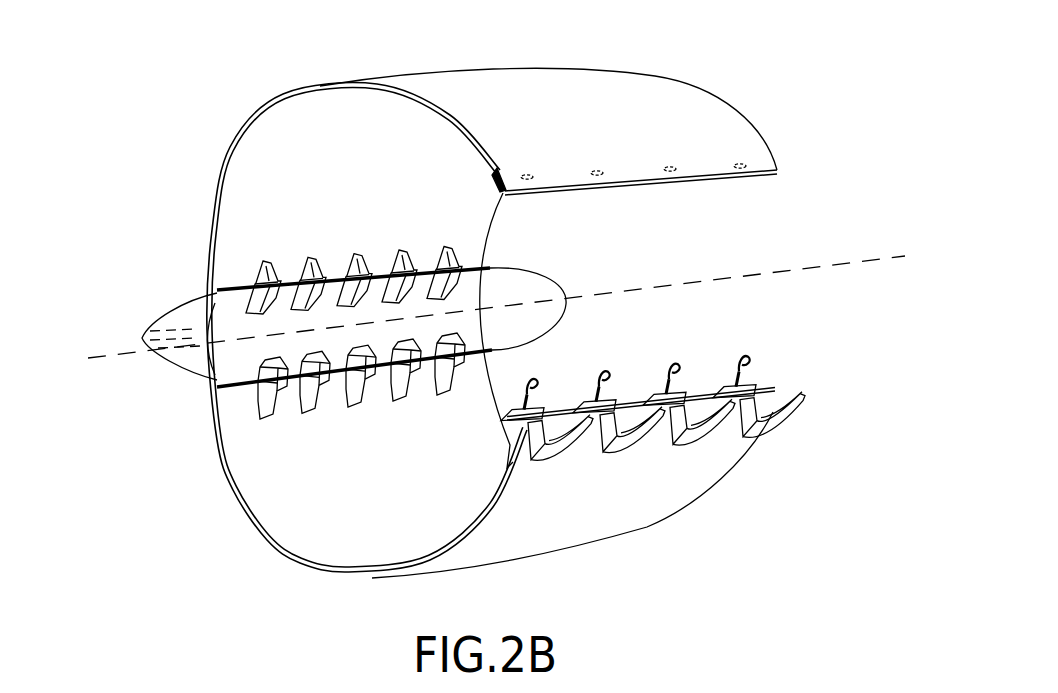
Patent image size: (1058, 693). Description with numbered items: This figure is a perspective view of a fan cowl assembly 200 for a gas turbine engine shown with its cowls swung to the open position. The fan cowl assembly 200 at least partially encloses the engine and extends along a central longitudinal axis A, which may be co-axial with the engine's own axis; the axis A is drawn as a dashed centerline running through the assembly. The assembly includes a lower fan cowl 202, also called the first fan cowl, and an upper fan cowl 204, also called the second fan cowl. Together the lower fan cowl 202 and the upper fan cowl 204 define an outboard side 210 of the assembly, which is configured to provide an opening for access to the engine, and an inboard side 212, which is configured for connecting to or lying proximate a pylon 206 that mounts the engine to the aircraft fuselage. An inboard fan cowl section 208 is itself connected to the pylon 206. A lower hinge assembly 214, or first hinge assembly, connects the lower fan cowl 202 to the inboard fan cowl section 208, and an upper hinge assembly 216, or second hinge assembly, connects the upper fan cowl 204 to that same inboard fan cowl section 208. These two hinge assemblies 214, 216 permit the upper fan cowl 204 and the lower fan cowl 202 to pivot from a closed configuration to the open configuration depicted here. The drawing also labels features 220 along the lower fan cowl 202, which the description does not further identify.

The fan cowl assembly 200 is at (178, 128).
The lower fan cowl 202 is at (730, 457).
The upper fan cowl 204 is at (700, 117).
The pylon 206 is at (173, 323).
The inboard fan cowl section 208 is at (240, 333).
The outboard side 210 is at (783, 232).
The inboard side 212 is at (178, 392).
The lower hinge assembly 214 is at (330, 412).
The upper hinge assembly 216 is at (337, 250).
The stator vanes 220 is at (572, 468).
The central longitudinal axis A is at (833, 266).